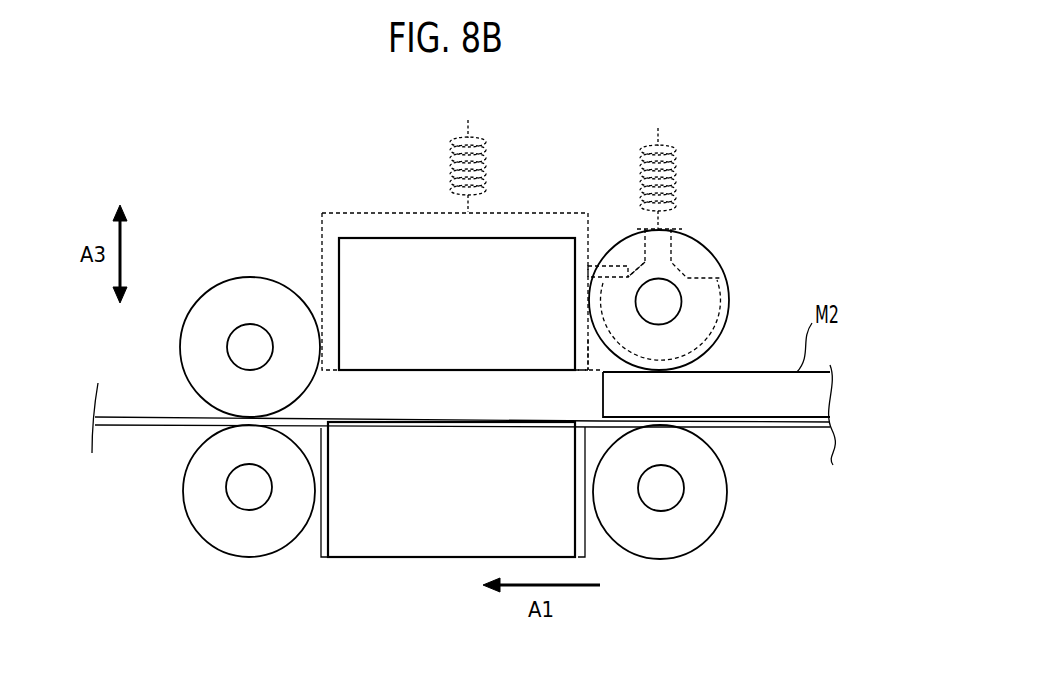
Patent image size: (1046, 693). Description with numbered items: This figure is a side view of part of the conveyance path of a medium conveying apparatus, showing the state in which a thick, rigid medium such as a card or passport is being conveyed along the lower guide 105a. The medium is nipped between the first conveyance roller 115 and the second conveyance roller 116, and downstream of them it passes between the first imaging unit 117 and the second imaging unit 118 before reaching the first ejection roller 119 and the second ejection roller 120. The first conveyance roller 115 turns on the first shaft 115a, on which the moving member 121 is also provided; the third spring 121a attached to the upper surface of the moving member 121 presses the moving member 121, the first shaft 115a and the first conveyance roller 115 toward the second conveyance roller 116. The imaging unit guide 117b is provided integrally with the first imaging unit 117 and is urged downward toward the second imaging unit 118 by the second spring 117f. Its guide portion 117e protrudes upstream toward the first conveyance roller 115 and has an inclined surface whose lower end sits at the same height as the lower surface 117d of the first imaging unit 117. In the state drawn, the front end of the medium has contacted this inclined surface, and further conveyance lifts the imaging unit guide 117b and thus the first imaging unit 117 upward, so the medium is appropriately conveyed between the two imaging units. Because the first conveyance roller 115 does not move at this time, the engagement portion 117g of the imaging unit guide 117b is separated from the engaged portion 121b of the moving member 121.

The lower guide 105a is at (783, 428).
The first conveyance roller 115 is at (710, 248).
The first shaft 115a is at (681, 300).
The second conveyance roller 116 is at (698, 535).
The first imaging unit 117 is at (387, 250).
The imaging unit guide 117b is at (527, 212).
The lower surface 117d is at (392, 370).
The guide portion 117e is at (600, 362).
The second spring 117f is at (485, 133).
The engagement portion 117g is at (618, 267).
The second imaging unit 118 is at (382, 557).
The first ejection roller 119 is at (230, 277).
The second ejection roller 120 is at (250, 557).
The moving member 121 is at (682, 228).
The third spring 121a is at (675, 160).
The engaged portion 121b is at (617, 280).